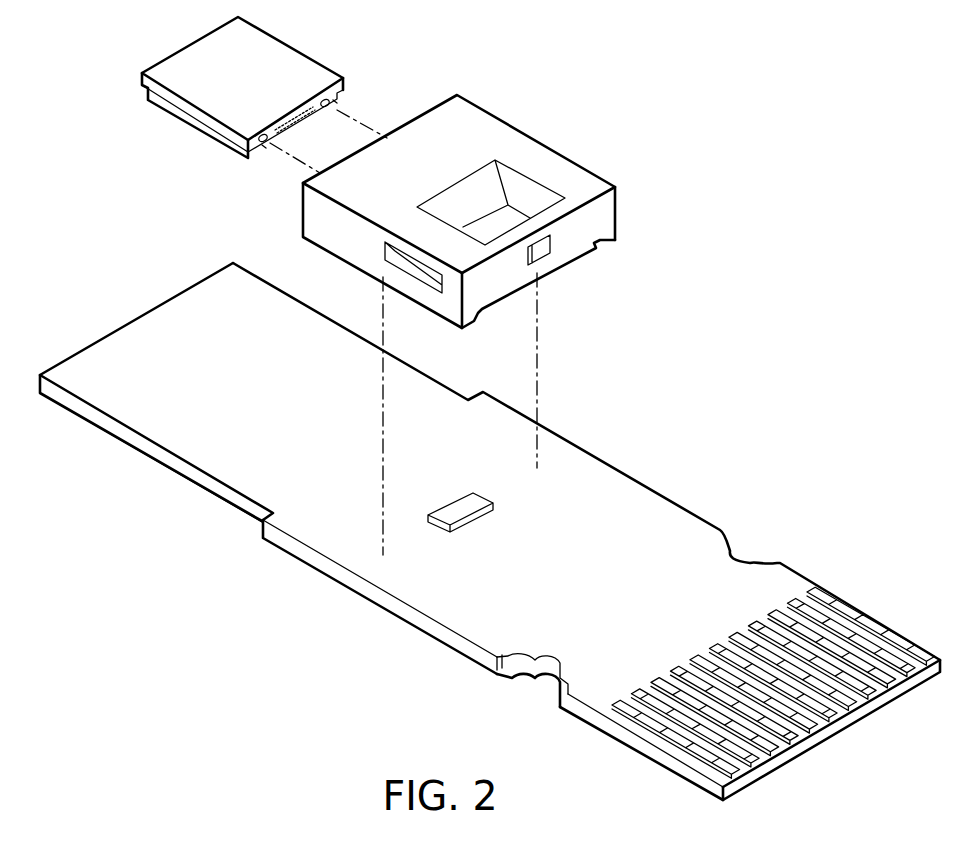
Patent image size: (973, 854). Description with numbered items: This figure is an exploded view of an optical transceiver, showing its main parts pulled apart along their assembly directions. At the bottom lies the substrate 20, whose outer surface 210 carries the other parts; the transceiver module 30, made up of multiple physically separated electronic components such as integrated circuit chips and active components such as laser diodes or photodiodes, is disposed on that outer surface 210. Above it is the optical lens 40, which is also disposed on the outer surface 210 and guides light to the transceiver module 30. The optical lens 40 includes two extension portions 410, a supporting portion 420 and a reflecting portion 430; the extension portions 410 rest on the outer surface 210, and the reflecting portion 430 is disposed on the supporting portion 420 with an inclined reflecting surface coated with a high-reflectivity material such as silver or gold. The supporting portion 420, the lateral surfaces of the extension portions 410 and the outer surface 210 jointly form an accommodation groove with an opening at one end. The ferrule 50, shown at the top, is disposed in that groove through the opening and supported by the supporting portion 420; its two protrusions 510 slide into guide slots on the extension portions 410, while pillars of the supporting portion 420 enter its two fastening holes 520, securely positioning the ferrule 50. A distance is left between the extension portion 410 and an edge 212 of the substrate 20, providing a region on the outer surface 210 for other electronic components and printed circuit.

The substrate 20 is at (490, 531).
The transceiver module 30 is at (472, 503).
The optical lens 40 is at (543, 203).
The ferrule 50 is at (258, 122).
The outer surface 210 is at (540, 623).
The edge 212 is at (278, 538).
The extension portions 410 is at (622, 237).
The supporting portion 420 is at (600, 165).
The reflecting portion 430 is at (521, 168).
The protrusions 510 is at (329, 100).
The fastening holes 520 is at (341, 101).